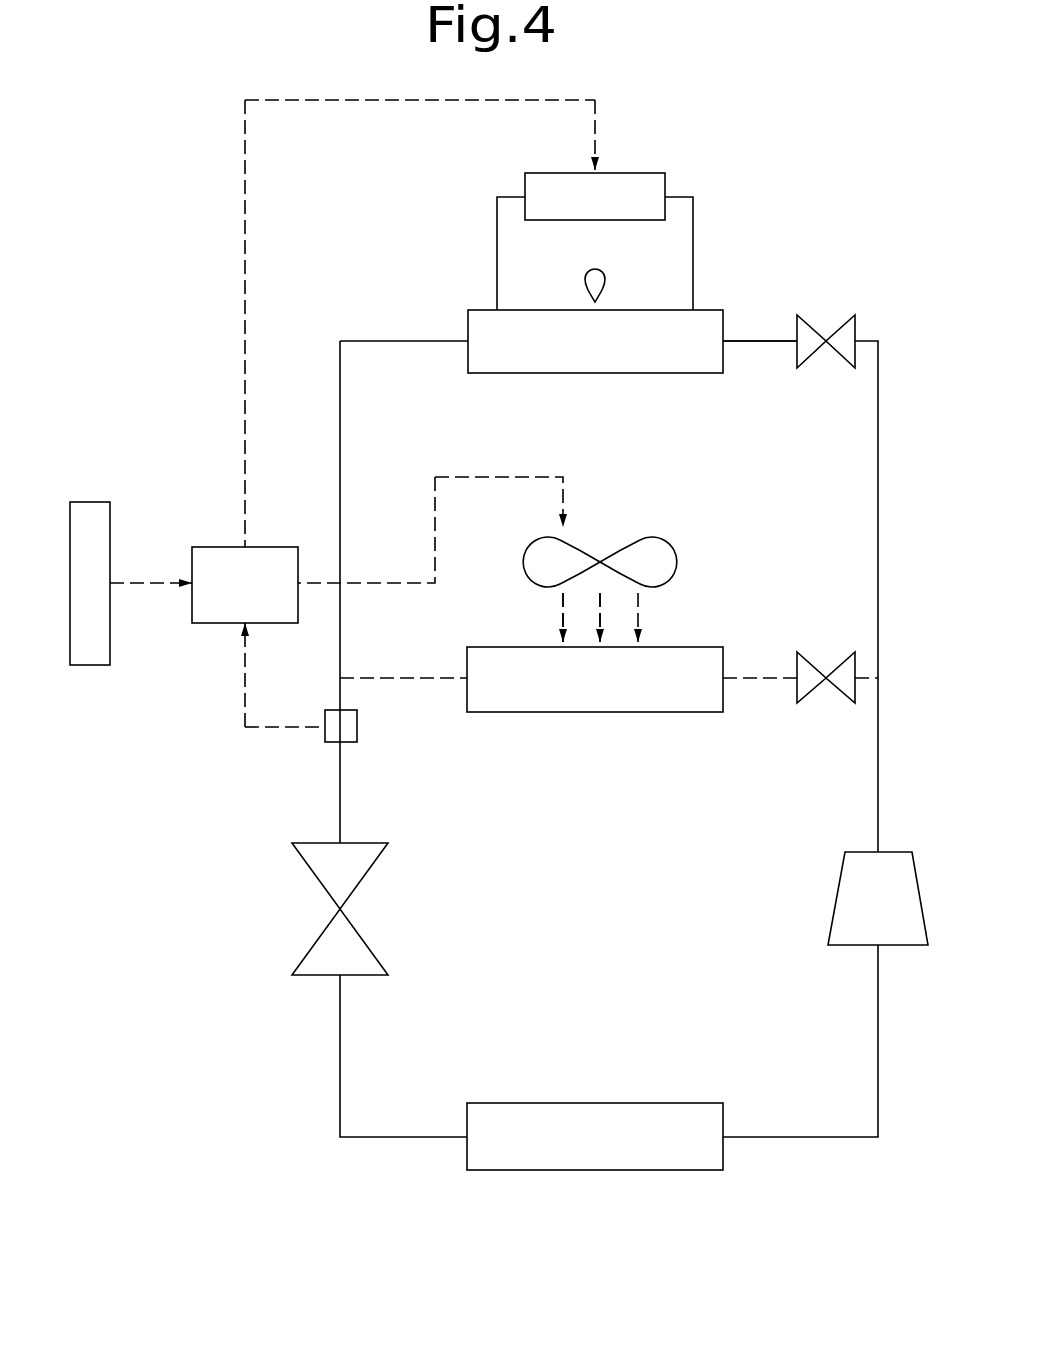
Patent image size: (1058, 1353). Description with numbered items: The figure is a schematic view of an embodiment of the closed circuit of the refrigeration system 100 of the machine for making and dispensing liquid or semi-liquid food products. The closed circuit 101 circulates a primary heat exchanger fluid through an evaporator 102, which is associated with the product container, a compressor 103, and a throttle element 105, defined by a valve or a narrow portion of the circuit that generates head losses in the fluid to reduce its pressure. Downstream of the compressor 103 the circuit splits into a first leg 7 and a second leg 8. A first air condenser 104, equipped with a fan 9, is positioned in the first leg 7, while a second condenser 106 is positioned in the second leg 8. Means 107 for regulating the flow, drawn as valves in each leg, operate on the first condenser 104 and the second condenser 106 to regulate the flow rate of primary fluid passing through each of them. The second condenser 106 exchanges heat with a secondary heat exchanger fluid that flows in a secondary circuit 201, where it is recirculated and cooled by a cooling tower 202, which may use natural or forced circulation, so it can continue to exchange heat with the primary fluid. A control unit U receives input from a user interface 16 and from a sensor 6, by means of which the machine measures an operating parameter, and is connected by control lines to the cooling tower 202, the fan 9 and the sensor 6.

The refrigeration system 100 is at (231, 346).
The closed circuit 101 is at (363, 333).
The evaporator 102 is at (598, 1136).
The compressor 103 is at (845, 897).
The first air condenser 104 is at (598, 683).
The throttle element 105 is at (325, 909).
The second condenser 106 is at (688, 333).
The means for regulating the flow 107 is at (818, 368).
The secondary circuit 201 is at (483, 219).
The cooling tower 202 is at (648, 172).
The sensor 6 is at (368, 740).
The first leg 7 is at (748, 675).
The second leg 8 is at (757, 336).
The fan 9 is at (675, 545).
The user interface 16 is at (89, 668).
The control unit U is at (245, 578).